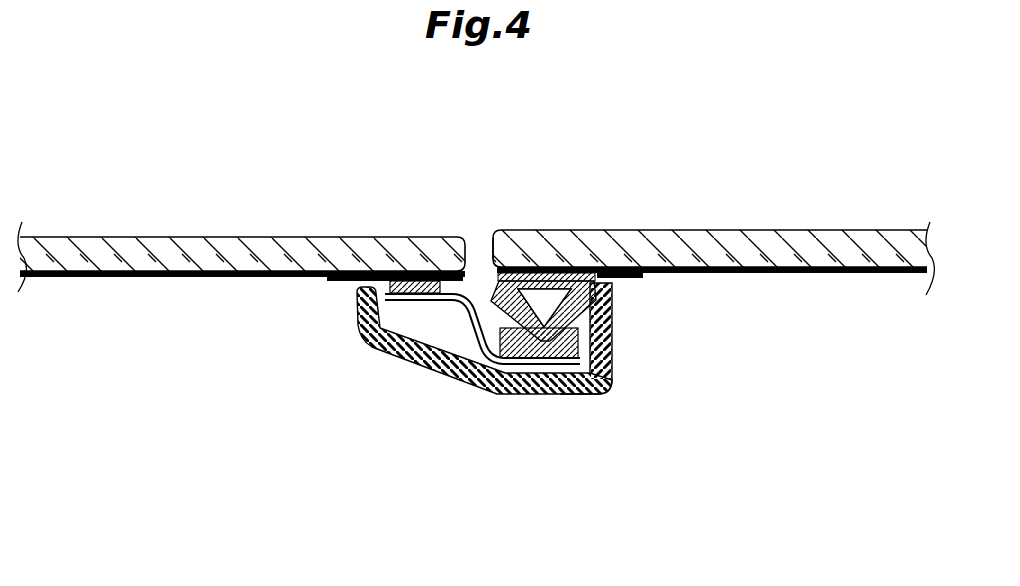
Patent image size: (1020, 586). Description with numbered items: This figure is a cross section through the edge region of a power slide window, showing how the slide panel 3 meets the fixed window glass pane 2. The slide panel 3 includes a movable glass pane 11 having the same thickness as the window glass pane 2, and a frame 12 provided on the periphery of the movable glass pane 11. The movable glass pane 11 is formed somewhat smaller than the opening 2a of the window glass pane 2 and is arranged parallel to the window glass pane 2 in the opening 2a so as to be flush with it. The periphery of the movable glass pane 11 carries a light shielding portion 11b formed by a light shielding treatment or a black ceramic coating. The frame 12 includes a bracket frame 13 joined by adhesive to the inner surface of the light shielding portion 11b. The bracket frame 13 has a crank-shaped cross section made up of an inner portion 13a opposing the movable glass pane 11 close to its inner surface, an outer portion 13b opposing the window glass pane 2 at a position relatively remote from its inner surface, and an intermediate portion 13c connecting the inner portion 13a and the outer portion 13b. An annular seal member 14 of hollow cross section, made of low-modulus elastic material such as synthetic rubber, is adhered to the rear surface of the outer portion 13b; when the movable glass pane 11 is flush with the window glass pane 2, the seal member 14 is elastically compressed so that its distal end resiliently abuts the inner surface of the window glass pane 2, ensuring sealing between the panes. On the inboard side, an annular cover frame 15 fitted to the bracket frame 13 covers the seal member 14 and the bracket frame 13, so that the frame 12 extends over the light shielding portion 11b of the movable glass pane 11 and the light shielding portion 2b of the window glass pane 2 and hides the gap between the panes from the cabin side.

The window glass pane 2 is at (710, 252).
The opening 2a is at (493, 238).
The light shielding portion 2b is at (630, 278).
The slide panel 3 is at (241, 255).
The movable glass pane 11 is at (300, 237).
The light shielding portion 11b is at (327, 281).
The frame 12 is at (484, 387).
The bracket frame 13 is at (455, 368).
The inner portion 13a is at (405, 303).
The outer portion 13b is at (542, 350).
The intermediate portion 13c is at (457, 311).
The seal member 14 is at (597, 279).
The cover frame 15 is at (570, 396).